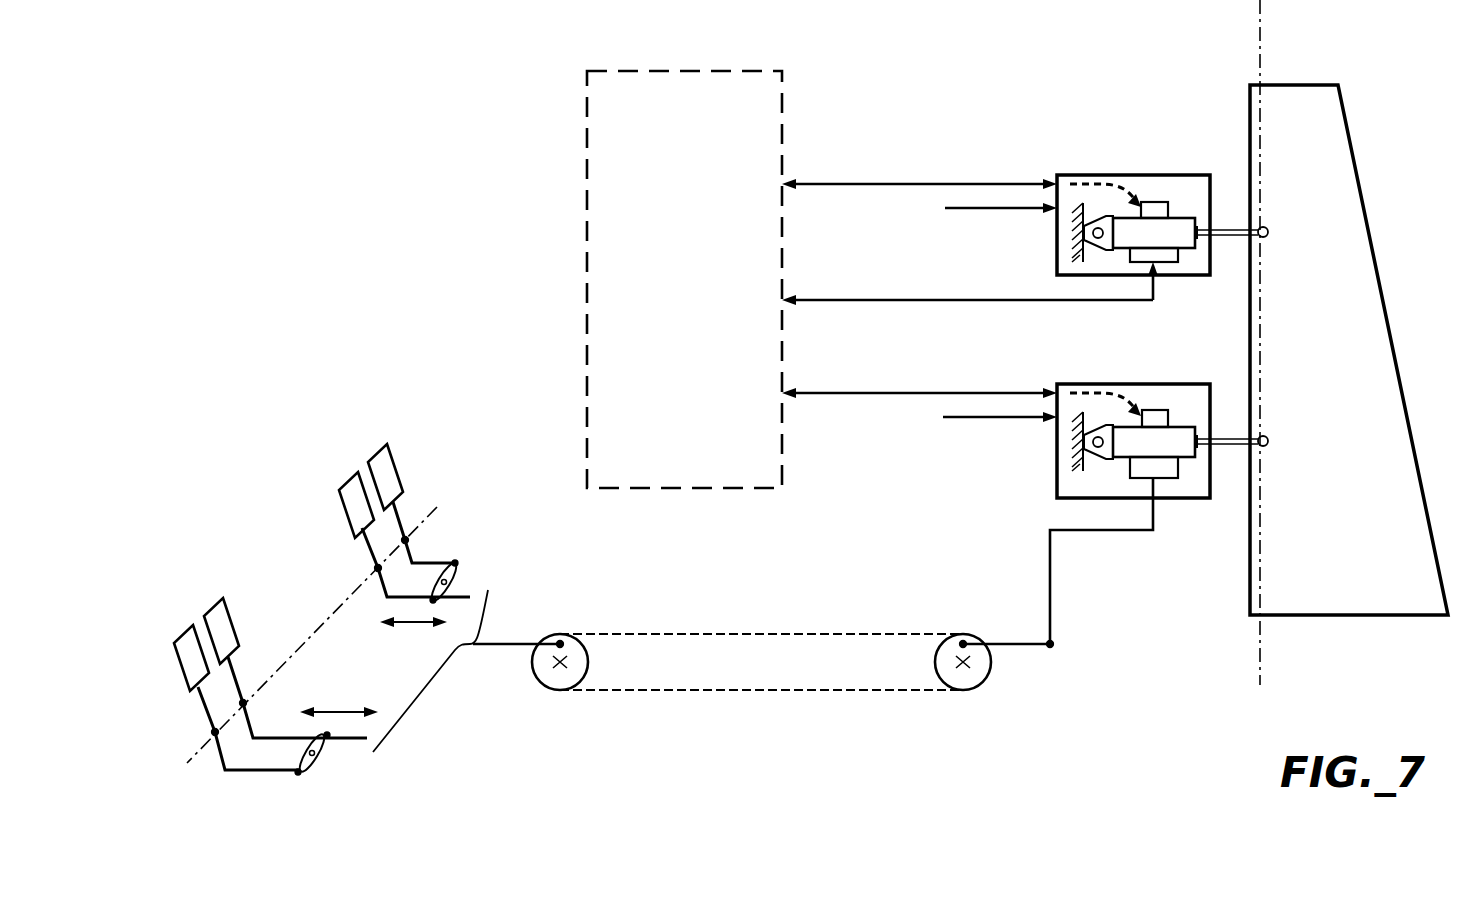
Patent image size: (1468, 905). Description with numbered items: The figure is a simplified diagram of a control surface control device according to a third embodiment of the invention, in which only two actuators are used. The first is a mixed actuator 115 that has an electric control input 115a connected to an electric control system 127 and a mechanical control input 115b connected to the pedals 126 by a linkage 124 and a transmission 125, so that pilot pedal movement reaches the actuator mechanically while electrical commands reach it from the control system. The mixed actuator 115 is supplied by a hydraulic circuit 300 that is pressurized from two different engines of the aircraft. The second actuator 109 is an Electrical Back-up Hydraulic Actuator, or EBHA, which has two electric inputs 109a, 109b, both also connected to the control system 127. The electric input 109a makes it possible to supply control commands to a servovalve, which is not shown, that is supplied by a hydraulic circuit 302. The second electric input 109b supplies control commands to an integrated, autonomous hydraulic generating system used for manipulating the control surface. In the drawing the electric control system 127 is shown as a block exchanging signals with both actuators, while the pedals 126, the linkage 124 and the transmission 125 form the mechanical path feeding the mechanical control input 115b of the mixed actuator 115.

The electric control system 127 is at (783, 92).
The second actuator 109 is at (1179, 205).
The electric input 109a is at (1157, 202).
The second electric input 109b is at (1172, 255).
The hydraulic circuit 302 is at (997, 208).
The mixed actuator 115 is at (1176, 428).
The electric control input 115a is at (1157, 410).
The mechanical control input 115b is at (1172, 470).
The hydraulic circuit 300 is at (997, 417).
The transmission 125 is at (1052, 600).
The linkage 124 is at (867, 692).
The pedals 126 is at (237, 585).